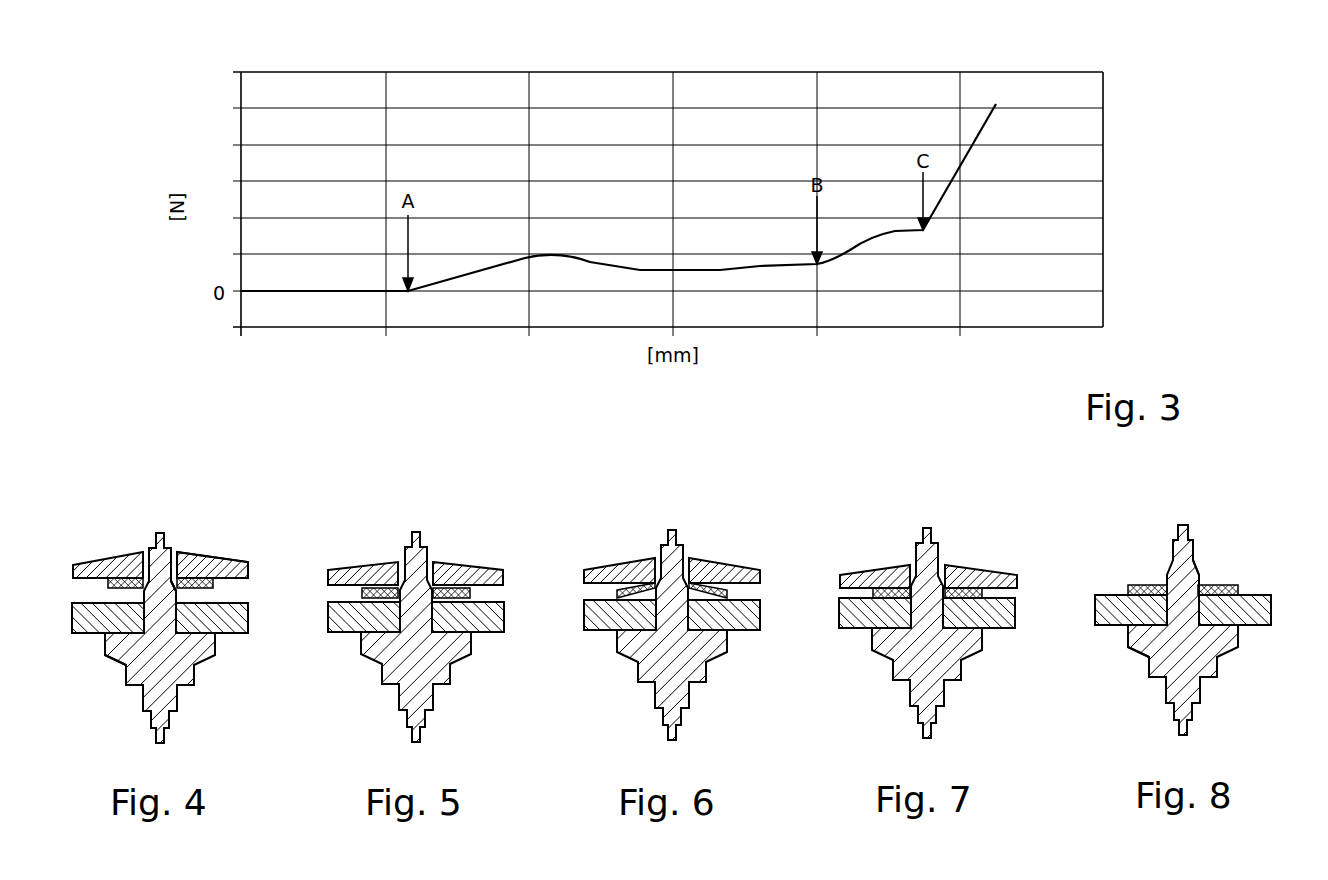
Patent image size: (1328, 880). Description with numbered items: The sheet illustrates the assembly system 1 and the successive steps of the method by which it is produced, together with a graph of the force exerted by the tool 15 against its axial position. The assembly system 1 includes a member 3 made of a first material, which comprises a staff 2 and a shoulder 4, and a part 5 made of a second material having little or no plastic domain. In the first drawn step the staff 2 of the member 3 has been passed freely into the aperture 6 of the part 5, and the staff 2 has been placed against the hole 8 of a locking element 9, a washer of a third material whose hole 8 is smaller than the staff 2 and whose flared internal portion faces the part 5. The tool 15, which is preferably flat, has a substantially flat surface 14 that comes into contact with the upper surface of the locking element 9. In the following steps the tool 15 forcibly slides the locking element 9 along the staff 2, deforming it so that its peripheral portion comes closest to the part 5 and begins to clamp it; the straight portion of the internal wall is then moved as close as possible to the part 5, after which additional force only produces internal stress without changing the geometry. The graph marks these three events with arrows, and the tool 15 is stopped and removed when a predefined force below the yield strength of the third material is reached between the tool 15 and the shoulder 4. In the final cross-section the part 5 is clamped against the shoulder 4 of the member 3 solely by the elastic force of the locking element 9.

In FIG. 8, the assembly system 1 is at (1201, 600).
In FIG. 4, the staff 2 is at (220, 584).
In FIG. 8, the staff 2 is at (1203, 548).
In FIG. 4, the member 3 is at (162, 641).
In FIG. 5, the member 3 is at (418, 638).
In FIG. 6, the member 3 is at (674, 637).
In FIG. 7, the member 3 is at (930, 635).
In FIG. 8, the member 3 is at (1184, 632).
In FIG. 4, the shoulder 4 is at (111, 669).
In FIG. 8, the shoulder 4 is at (1134, 662).
In FIG. 4, the part 5 is at (163, 644).
In FIG. 5, the part 5 is at (418, 643).
In FIG. 6, the part 5 is at (674, 641).
In FIG. 7, the part 5 is at (929, 638).
In FIG. 8, the part 5 is at (1185, 635).
In FIG. 4, the aperture 6 is at (110, 552).
In FIG. 4, the hole 8 is at (176, 546).
In FIG. 4, the locking element 9 is at (220, 551).
In FIG. 5, the locking element 9 is at (451, 588).
In FIG. 6, the locking element 9 is at (707, 588).
In FIG. 7, the locking element 9 is at (963, 575).
In FIG. 8, the locking element 9 is at (1218, 573).
In FIG. 4, the flat surface 14 is at (238, 575).
In FIG. 4, the tool 15 is at (160, 545).
In FIG. 5, the tool 15 is at (415, 556).
In FIG. 6, the tool 15 is at (672, 554).
In FIG. 7, the tool 15 is at (928, 554).